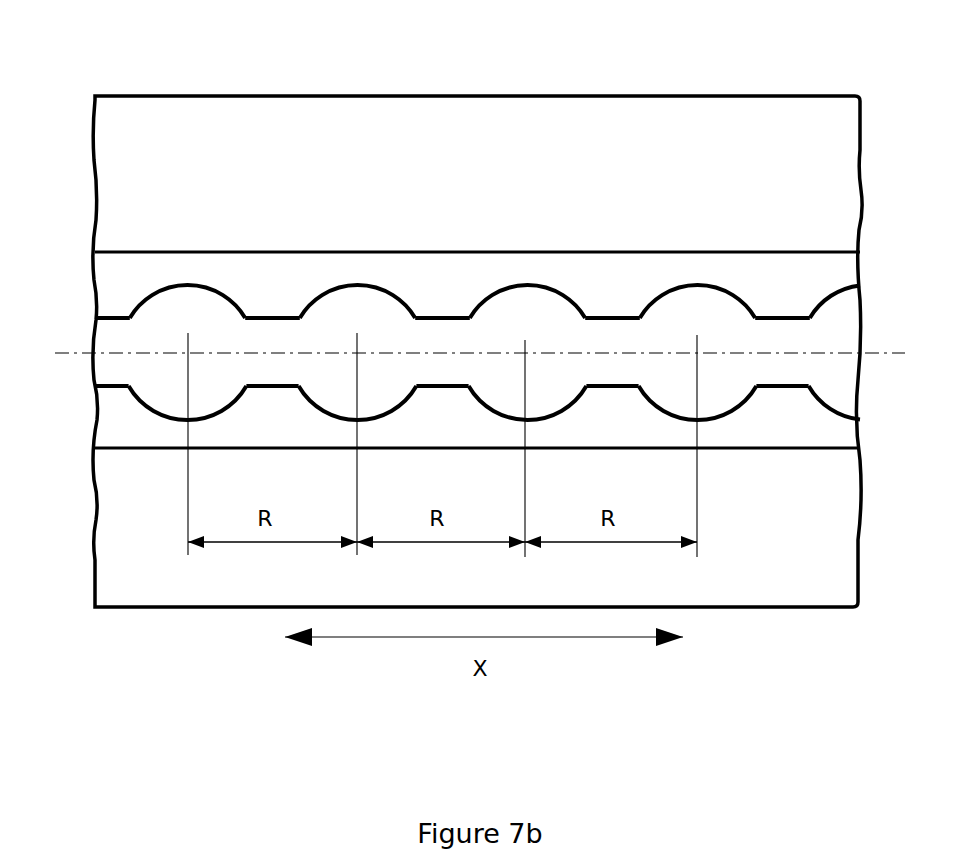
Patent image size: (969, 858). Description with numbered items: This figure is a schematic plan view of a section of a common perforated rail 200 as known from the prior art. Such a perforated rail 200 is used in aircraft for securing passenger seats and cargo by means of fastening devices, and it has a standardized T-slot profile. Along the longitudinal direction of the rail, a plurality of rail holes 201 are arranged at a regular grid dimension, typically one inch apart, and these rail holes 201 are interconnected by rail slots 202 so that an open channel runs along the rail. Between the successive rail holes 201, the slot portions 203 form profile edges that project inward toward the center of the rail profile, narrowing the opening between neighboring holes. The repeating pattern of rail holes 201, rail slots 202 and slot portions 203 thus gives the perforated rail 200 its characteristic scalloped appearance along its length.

The perforated rail 200 is at (74, 113).
The rail hole 201 is at (162, 330).
The rail slot 202 is at (106, 332).
The slot portion 203 is at (270, 282).